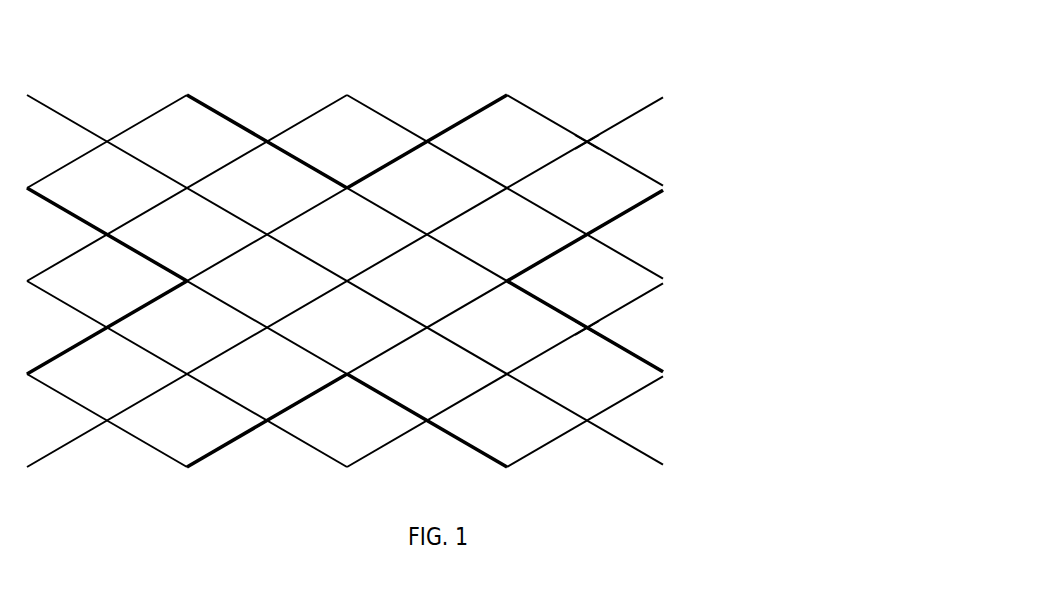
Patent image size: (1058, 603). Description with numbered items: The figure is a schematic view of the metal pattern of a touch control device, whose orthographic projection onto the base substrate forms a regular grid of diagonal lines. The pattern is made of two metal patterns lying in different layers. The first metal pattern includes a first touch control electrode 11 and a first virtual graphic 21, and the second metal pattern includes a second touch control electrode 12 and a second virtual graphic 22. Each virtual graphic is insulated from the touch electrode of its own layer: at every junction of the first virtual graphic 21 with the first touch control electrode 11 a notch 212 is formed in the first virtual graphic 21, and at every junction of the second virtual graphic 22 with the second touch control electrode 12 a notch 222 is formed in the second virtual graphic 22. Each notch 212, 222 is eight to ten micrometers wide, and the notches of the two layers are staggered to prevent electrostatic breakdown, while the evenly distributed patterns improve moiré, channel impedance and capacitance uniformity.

The first touch control electrode 11 is at (587, 145).
The second touch control electrode 12 is at (650, 263).
The first virtual graphic 21 is at (632, 165).
The notch 212 is at (588, 147).
The second virtual graphic 22 is at (650, 364).
The notch 222 is at (587, 325).